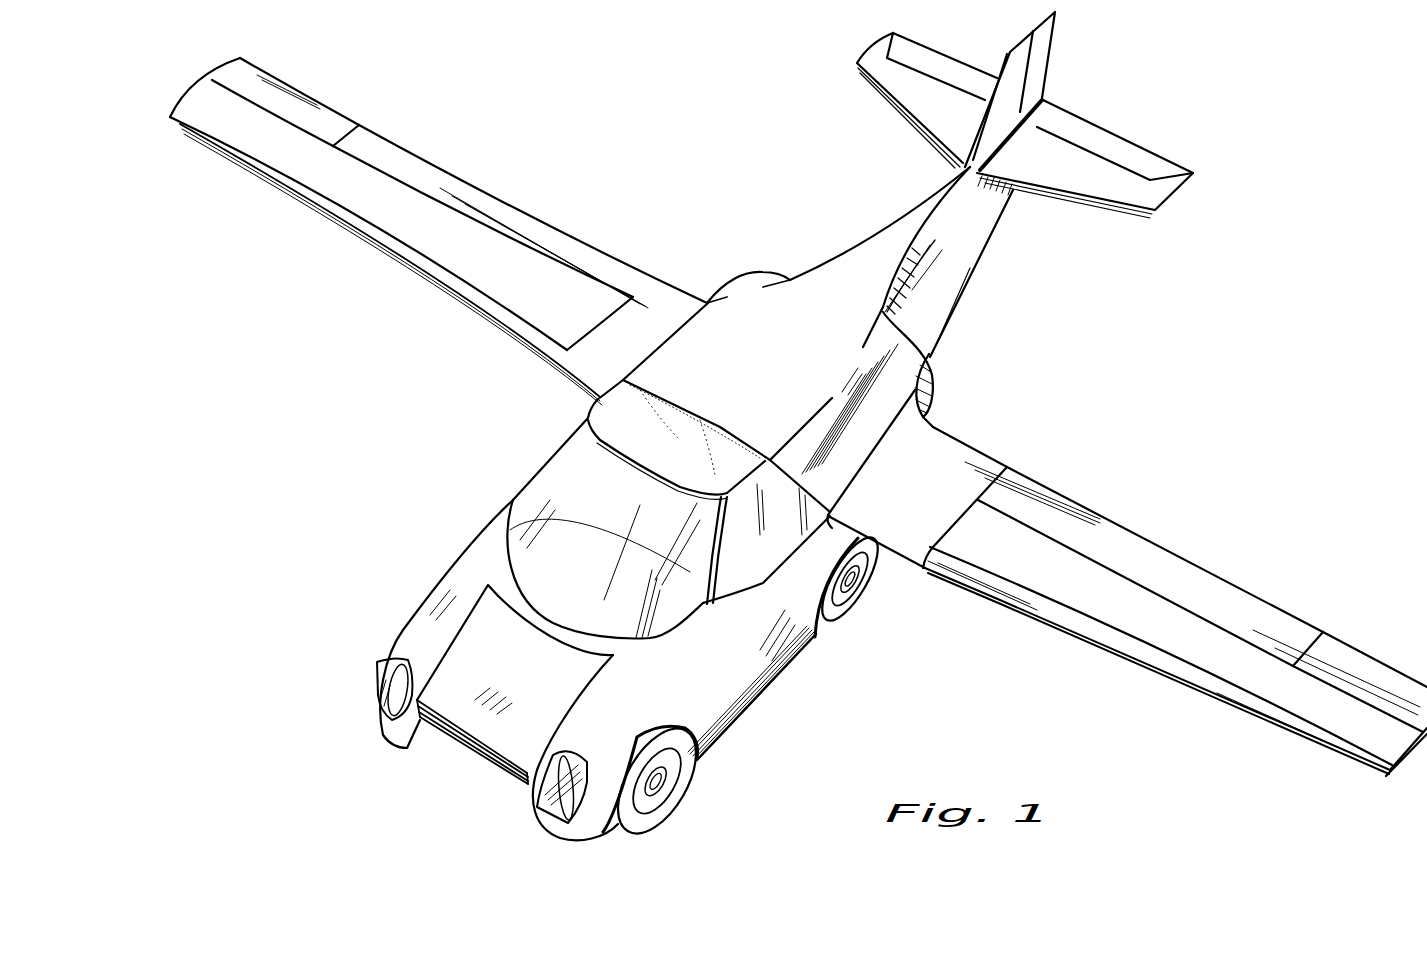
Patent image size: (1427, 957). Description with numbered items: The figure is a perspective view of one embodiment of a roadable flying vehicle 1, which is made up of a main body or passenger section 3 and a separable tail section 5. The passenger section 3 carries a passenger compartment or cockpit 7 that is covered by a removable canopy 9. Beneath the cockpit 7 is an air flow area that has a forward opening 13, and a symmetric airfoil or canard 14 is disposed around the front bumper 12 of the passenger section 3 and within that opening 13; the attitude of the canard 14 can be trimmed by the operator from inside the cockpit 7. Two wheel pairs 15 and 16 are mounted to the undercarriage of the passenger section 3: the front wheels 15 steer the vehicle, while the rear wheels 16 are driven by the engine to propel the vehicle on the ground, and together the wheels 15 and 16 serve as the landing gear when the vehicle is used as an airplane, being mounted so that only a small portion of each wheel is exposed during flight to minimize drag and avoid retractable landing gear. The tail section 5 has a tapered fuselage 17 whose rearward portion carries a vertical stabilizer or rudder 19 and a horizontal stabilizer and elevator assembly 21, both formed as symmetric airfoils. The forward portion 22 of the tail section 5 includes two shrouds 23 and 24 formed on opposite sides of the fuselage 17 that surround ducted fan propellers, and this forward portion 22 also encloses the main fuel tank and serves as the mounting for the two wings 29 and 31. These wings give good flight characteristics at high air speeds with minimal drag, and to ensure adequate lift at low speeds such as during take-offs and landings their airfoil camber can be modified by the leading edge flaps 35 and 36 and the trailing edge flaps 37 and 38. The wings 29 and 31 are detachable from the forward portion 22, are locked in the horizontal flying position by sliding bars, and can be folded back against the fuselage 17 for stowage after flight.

The vehicle 1 is at (453, 493).
The passenger section 3 is at (770, 620).
The tail section 5 is at (947, 289).
The cockpit 7 is at (560, 470).
The canopy 9 is at (617, 413).
The front bumper 12 is at (515, 790).
The forward opening 13 is at (463, 765).
The canard 14 is at (440, 740).
The front wheels 15 is at (660, 812).
The rear wheels 16 is at (858, 596).
The fuselage 17 is at (892, 228).
The vertical stabilizer 19 is at (1043, 55).
The horizontal stabilizer and elevator assembly 21 is at (1123, 147).
The forward portion 22 is at (802, 335).
The shroud 23 is at (769, 271).
The shroud 24 is at (933, 378).
The wing 29 is at (312, 157).
The wing 31 is at (1203, 637).
The leading edge flap 35 is at (373, 237).
The leading edge flap 36 is at (1165, 675).
The trailing edge flap 37 is at (425, 167).
The trailing edge flap 38 is at (1147, 548).